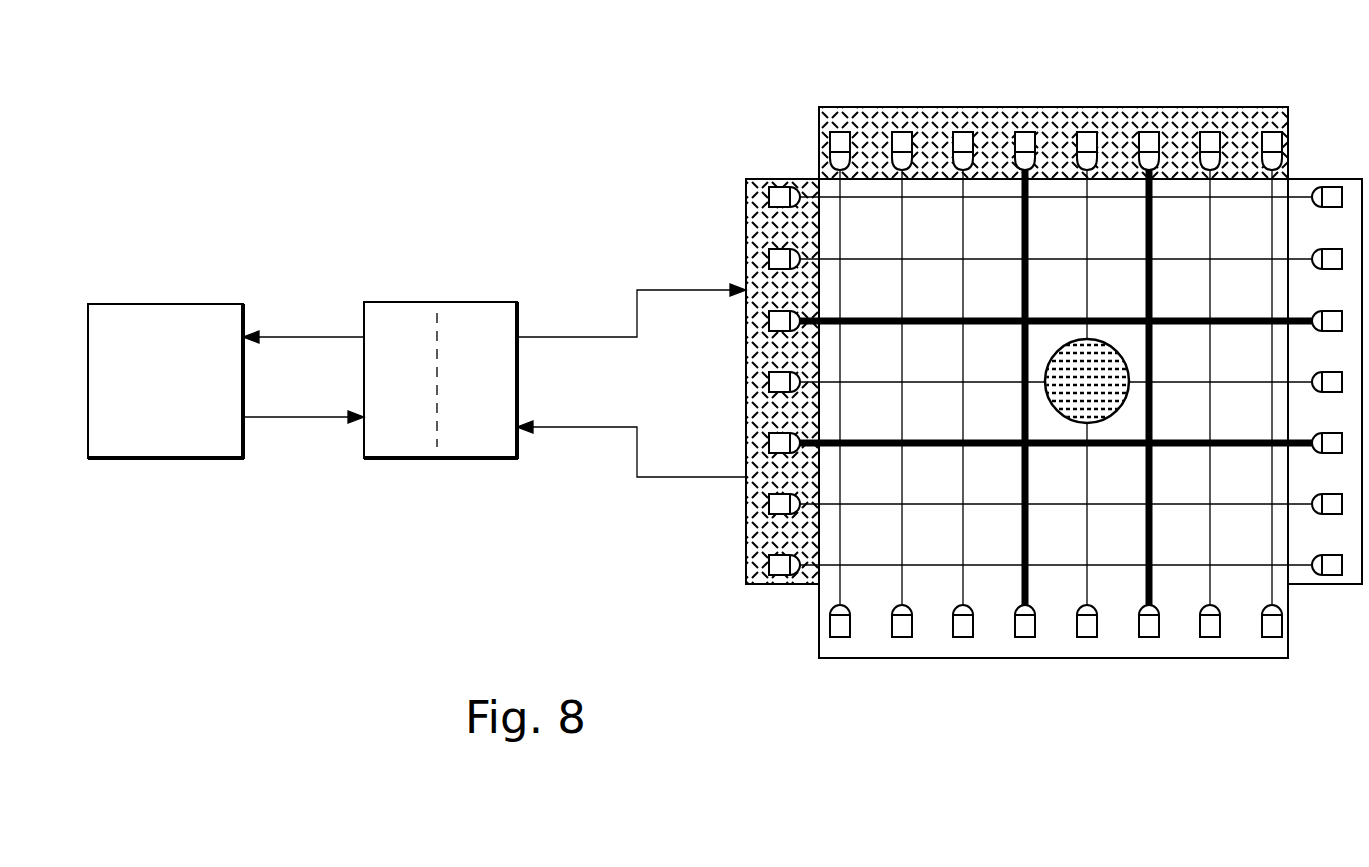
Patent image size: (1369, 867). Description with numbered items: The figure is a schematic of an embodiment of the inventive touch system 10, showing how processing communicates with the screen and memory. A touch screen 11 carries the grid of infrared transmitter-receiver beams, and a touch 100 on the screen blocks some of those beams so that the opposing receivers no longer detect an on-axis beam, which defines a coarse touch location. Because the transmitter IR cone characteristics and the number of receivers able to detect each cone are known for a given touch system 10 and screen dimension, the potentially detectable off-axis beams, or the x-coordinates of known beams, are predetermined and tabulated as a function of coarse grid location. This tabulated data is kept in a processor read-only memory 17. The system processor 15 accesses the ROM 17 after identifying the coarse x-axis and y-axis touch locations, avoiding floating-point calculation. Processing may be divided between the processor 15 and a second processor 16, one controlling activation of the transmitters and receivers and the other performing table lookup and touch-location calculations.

The touch system 10 is at (625, 131).
The touch screen 11 is at (1059, 222).
The system processor 15 is at (400, 458).
The processor 16 is at (473, 337).
The processor read only memory 17 is at (148, 458).
The touch 100 is at (1086, 382).